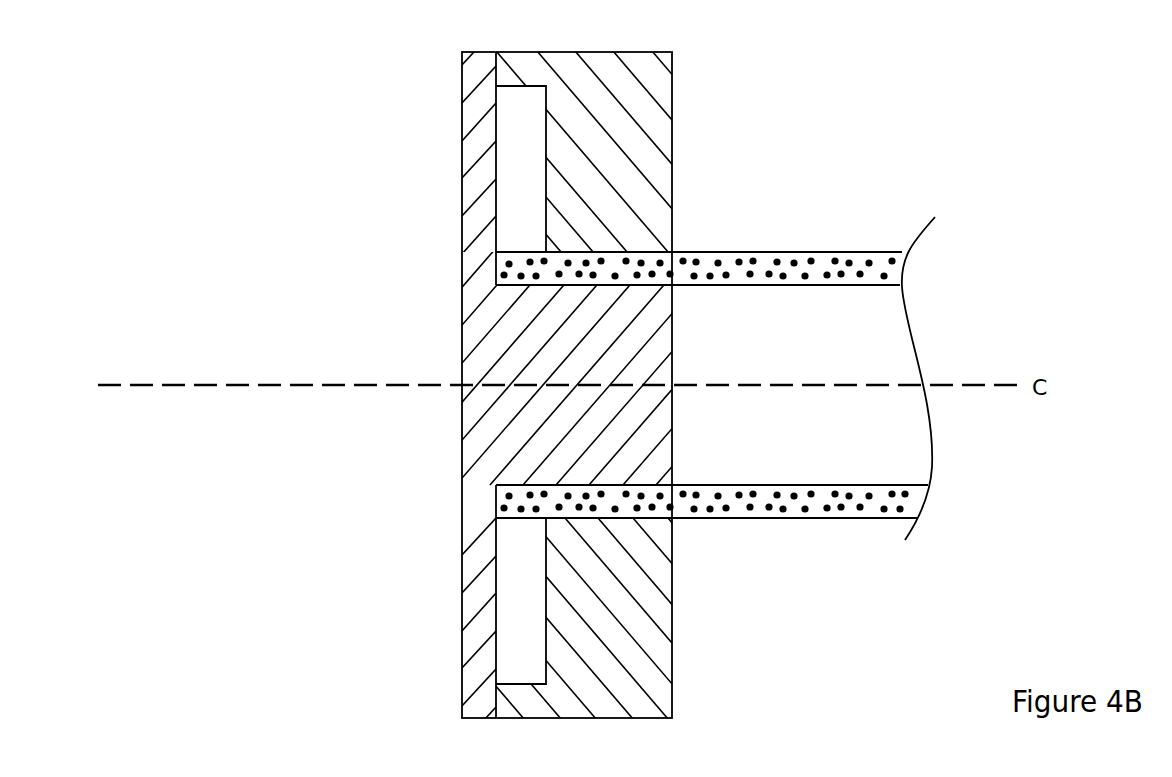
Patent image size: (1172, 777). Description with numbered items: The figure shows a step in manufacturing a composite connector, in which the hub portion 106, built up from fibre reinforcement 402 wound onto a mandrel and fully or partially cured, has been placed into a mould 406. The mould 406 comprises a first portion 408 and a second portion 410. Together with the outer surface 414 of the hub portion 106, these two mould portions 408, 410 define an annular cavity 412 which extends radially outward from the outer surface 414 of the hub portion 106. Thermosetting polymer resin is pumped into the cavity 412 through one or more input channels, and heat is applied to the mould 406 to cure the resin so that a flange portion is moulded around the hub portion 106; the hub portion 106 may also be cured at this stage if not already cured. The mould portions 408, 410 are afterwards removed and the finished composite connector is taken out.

The mould 406 is at (435, 93).
The first portion 408 is at (482, 449).
The second portion 410 is at (652, 138).
The annular cavity 412 is at (512, 149).
The outer surface 414 is at (522, 250).
The hub portion 106 is at (728, 250).
The fibre reinforcement 402 is at (833, 250).